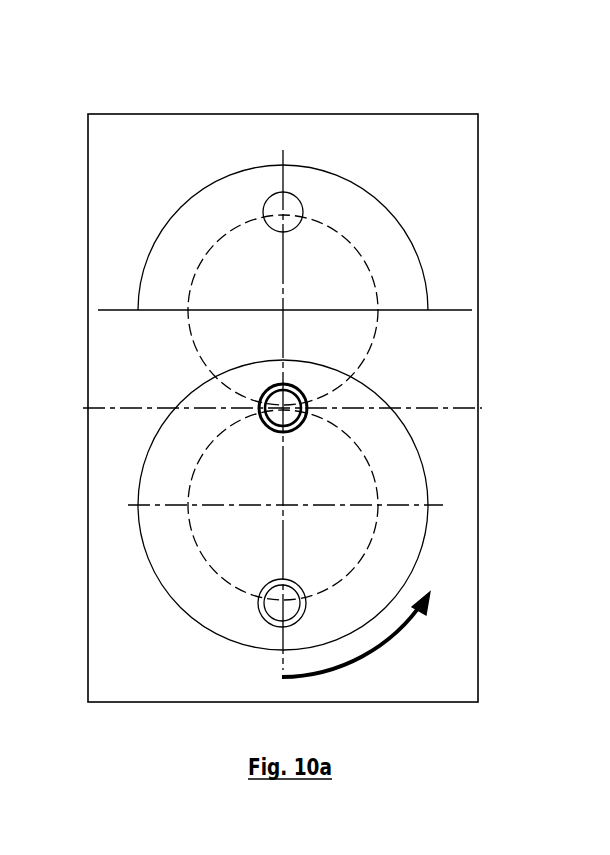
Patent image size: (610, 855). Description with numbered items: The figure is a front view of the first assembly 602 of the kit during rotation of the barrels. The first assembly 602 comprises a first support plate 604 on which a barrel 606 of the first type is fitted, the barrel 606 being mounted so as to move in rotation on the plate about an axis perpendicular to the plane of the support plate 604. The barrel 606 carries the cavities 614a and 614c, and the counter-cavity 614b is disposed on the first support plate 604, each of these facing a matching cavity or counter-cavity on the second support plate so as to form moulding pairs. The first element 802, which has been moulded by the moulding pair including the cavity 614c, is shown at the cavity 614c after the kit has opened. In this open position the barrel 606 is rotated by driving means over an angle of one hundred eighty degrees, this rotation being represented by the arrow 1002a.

The first assembly 602 is at (392, 73).
The first support plate 604 is at (457, 173).
The barrel of the first type 606 is at (408, 472).
The cavity 614a is at (275, 616).
The counter-cavity 614b is at (276, 203).
The cavity 614c is at (307, 403).
The first element 802 is at (260, 401).
The arrow 1002a is at (367, 635).